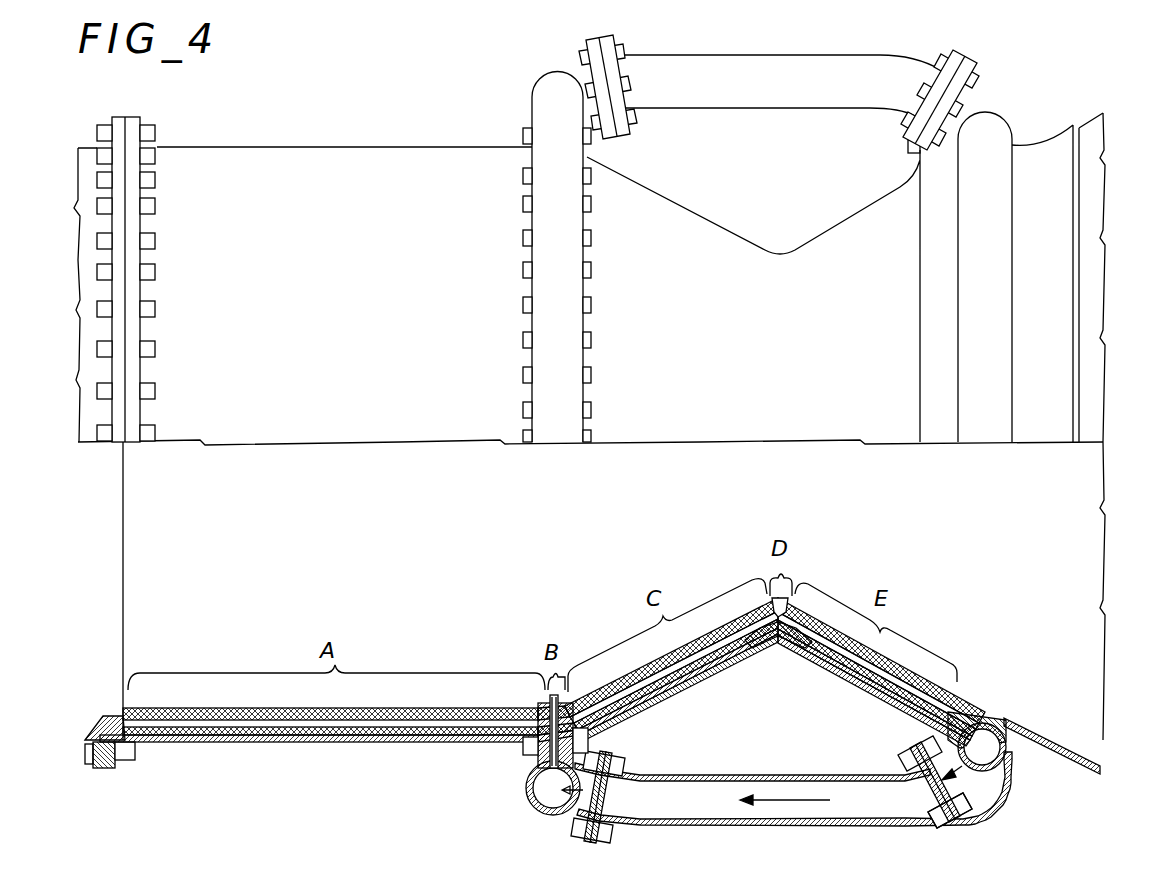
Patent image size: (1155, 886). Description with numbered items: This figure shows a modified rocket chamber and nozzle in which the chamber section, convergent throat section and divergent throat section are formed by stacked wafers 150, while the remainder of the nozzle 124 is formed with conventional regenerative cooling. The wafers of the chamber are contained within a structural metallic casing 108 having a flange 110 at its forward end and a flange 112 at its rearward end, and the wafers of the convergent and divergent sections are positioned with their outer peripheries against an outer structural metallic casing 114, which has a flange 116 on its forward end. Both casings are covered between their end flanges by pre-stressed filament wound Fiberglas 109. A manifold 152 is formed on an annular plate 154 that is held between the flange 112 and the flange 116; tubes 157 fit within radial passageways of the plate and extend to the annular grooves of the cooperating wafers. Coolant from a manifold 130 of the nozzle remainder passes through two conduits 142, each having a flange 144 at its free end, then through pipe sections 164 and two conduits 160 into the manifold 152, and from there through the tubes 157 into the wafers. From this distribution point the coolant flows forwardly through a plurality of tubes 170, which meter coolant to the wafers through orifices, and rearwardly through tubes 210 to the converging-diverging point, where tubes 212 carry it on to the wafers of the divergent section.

The flange 110 is at (133, 127).
The manifold 152 is at (545, 213).
The conduit 160 is at (572, 63).
The pipe section 164 is at (786, 55).
The conduit 142 is at (985, 102).
The manifold 130 is at (1005, 222).
The wafers 150 is at (357, 710).
The structural metallic casing 108 is at (240, 737).
The pre-stressed filament wound Fiberglas 109 is at (322, 740).
The tubes 170 is at (415, 722).
The flange 112 is at (537, 755).
The tube 157 is at (553, 772).
The annular plate 154 is at (588, 730).
The outer structural metallic casing 114 is at (660, 684).
The flange 116 is at (585, 752).
The tubes 210 is at (744, 652).
The tubes 212 is at (905, 688).
The remainder of the nozzle 124 is at (1040, 730).
The flange 144 is at (965, 830).